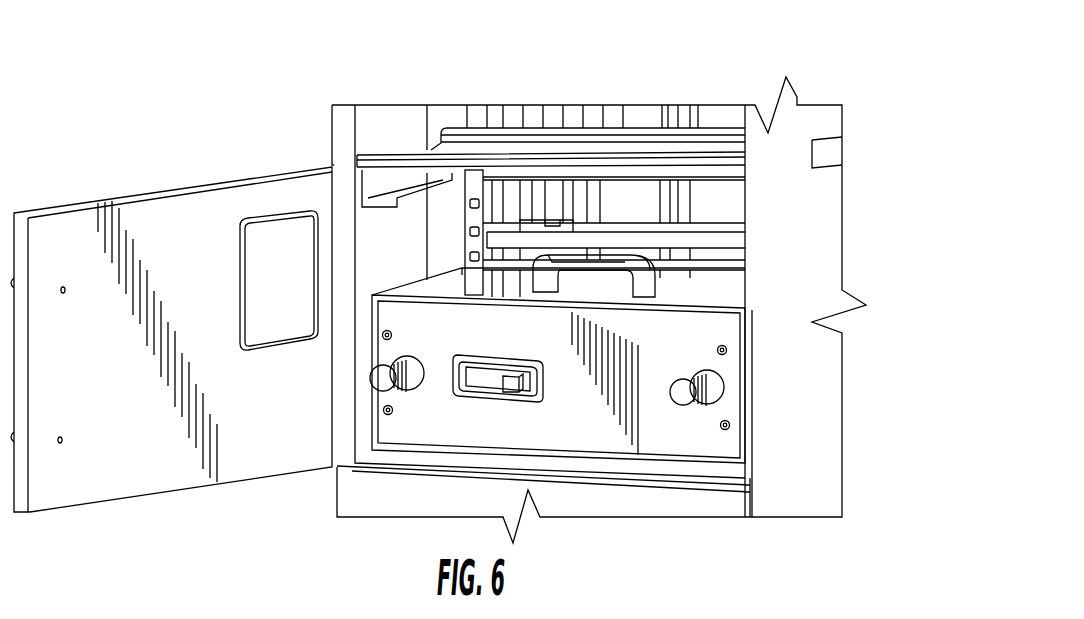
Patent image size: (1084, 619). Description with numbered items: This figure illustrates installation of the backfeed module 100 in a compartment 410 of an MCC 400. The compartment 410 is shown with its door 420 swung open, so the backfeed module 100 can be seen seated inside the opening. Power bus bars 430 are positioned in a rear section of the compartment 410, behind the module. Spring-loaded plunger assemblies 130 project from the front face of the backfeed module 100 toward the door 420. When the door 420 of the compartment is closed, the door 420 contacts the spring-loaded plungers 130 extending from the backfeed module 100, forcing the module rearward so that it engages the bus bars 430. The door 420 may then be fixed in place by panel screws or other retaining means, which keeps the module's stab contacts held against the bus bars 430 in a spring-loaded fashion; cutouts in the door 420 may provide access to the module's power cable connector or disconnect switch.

The MCC 400 is at (806, 94).
The compartment 410 is at (449, 217).
The power bus bars 430 is at (687, 205).
The backfeed module 100 is at (723, 292).
The spring-loaded plunger assemblies 130 is at (686, 395).
The door 420 is at (232, 467).